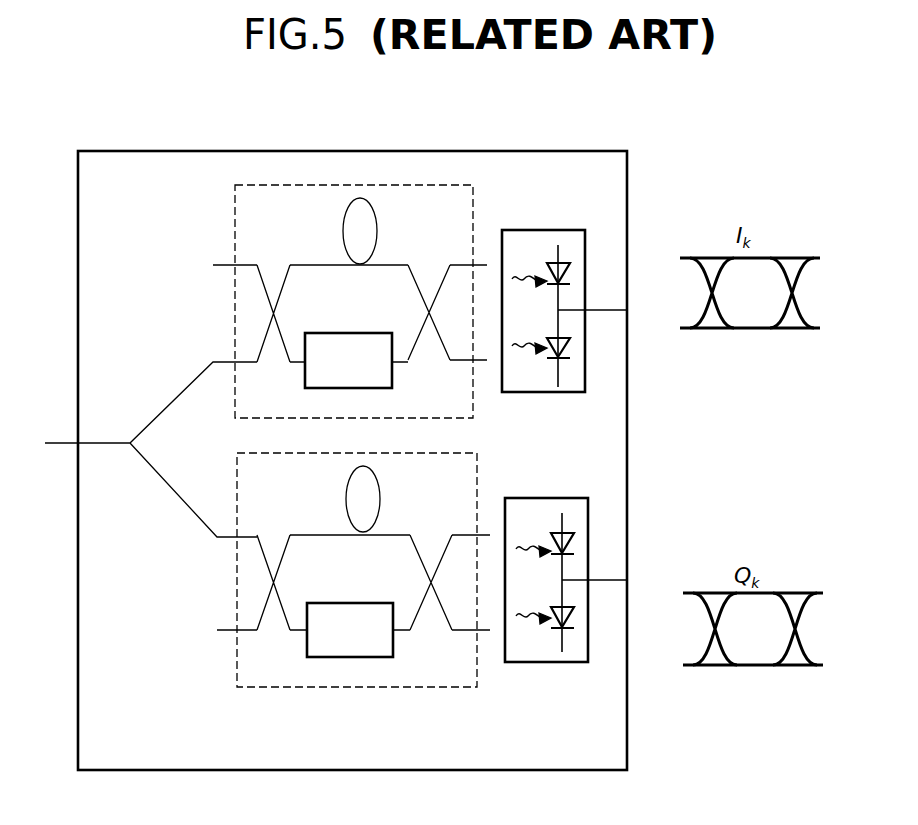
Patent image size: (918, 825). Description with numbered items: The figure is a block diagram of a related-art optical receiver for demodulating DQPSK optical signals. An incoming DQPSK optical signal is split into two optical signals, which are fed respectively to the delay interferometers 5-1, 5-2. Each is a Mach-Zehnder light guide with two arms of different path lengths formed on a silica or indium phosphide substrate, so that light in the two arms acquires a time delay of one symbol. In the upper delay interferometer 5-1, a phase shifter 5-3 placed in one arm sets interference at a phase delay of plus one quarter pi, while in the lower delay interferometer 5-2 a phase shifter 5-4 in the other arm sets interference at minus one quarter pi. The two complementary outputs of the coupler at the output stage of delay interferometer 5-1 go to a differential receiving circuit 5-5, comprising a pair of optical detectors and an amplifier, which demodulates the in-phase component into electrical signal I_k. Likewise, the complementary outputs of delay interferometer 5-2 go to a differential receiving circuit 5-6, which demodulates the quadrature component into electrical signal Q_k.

The delay interferometer 5-1 is at (235, 208).
The delay interferometer 5-2 is at (284, 690).
The phase shifter 5-3 is at (333, 333).
The phase shifter 5-4 is at (337, 603).
The differential receiving circuit 5-5 is at (544, 230).
The differential receiving circuit 5-6 is at (549, 498).